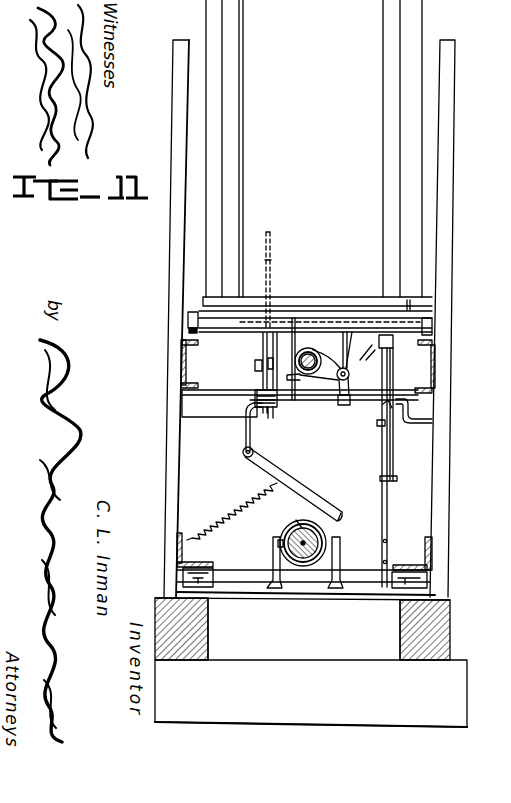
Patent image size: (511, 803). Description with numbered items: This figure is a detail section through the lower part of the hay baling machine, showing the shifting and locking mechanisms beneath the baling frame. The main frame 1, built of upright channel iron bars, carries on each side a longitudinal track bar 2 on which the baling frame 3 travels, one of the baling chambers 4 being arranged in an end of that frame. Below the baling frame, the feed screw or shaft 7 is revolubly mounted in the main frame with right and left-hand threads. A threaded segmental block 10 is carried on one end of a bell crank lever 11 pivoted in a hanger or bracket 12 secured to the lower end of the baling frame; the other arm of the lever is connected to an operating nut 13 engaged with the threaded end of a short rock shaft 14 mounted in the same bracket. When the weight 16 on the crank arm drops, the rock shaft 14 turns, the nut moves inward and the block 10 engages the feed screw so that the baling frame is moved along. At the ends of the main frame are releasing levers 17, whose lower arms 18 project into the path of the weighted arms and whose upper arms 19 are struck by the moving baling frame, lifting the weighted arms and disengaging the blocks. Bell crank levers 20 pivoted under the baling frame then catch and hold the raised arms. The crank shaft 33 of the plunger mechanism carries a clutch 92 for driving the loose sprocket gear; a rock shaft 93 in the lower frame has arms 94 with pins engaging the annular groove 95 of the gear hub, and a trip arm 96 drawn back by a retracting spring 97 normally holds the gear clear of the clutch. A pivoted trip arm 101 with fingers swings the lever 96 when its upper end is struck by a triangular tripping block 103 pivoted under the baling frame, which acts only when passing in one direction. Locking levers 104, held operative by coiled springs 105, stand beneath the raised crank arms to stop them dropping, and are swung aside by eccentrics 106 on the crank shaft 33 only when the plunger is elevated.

The main frame 1 is at (172, 245).
The track bar 2 is at (183, 352).
The baling frame 3 is at (268, 322).
The baling chamber 4 is at (314, 148).
The feed screw or shaft 7 is at (313, 345).
The segmental block 10 is at (311, 398).
The bell crank lever 11 is at (379, 346).
The hanger or bracket 12 is at (332, 346).
The operating nut 13 is at (343, 405).
The rock shaft 14 is at (338, 400).
The weight 16 is at (255, 400).
The angle or bell crank lever 17 is at (271, 265).
The lower arm 18 is at (262, 410).
The upper arm or member 19 is at (270, 233).
The bell crank lever 20 is at (262, 346).
The crank shaft 33 is at (301, 566).
The clutch 92 is at (284, 531).
The rock shaft 93 is at (247, 580).
The upwardly projecting arm 94 is at (272, 556).
The annular groove 95 is at (300, 524).
The trip arm 96 is at (394, 379).
The retracting spring 97 is at (380, 533).
The trip arm 101 is at (380, 442).
The tripping block 103 is at (432, 322).
The lever 104 is at (258, 463).
The coiled spring 105 is at (223, 517).
The eccentric 106 is at (350, 498).